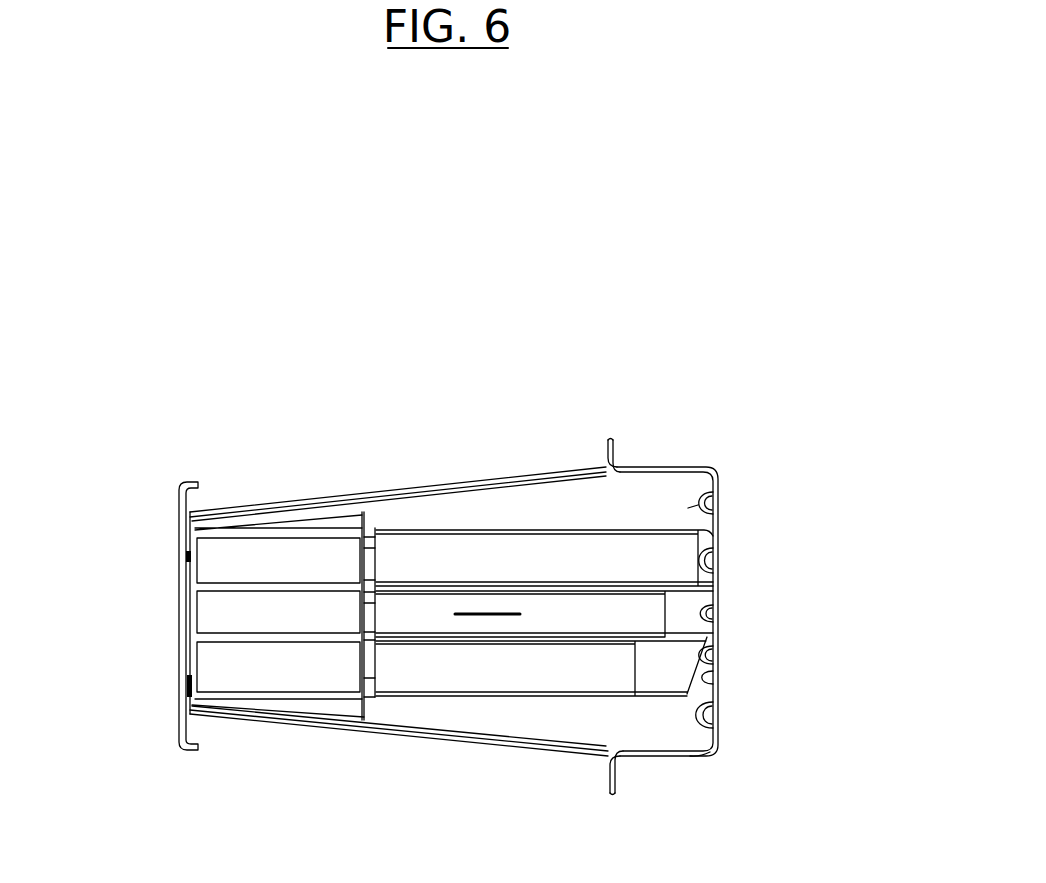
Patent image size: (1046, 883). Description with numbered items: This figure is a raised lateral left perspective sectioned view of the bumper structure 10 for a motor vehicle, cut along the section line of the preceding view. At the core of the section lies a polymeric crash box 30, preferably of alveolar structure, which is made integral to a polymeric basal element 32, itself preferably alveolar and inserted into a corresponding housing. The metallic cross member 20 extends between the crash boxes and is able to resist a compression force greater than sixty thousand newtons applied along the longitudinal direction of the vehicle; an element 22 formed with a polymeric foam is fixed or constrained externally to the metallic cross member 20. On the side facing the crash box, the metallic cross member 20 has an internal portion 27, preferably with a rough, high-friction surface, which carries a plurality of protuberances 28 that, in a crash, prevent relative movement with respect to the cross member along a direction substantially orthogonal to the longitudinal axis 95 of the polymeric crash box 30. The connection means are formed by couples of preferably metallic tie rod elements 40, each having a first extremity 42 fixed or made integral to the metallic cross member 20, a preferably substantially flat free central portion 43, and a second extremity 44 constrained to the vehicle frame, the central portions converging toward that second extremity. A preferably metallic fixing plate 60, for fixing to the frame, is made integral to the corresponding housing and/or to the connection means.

The bumper structure 10 is at (676, 236).
The metallic cross member 20 is at (772, 429).
The element formed with a polymeric foam 22 is at (720, 483).
The internal portion 27 is at (708, 758).
The protuberances 28 is at (700, 516).
The polymeric crash box 30 is at (550, 530).
The polymeric basal element 32 is at (270, 588).
The tie rod element 40 is at (500, 462).
The first extremity 42 is at (668, 478).
The free central portion 43 is at (430, 488).
The second extremity 44 is at (183, 537).
The fixing plate 60 is at (182, 500).
The longitudinal axis 95 is at (485, 613).